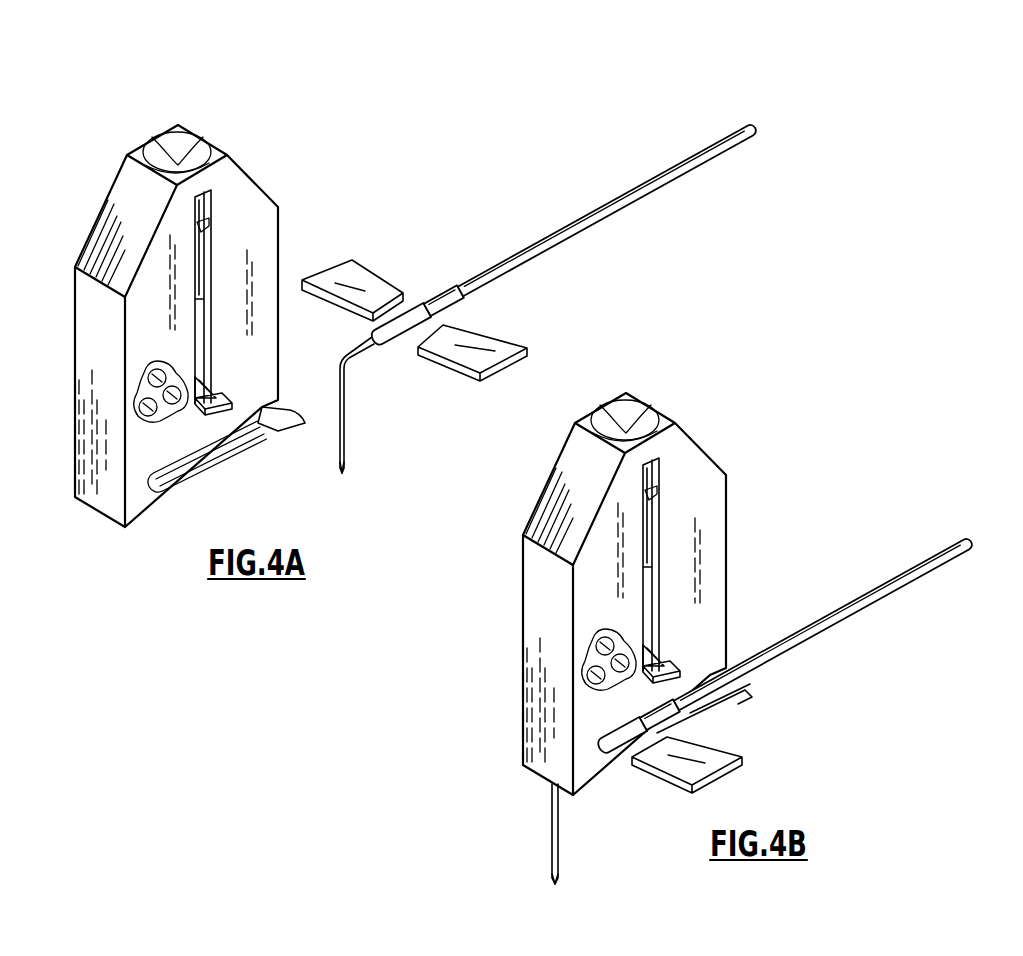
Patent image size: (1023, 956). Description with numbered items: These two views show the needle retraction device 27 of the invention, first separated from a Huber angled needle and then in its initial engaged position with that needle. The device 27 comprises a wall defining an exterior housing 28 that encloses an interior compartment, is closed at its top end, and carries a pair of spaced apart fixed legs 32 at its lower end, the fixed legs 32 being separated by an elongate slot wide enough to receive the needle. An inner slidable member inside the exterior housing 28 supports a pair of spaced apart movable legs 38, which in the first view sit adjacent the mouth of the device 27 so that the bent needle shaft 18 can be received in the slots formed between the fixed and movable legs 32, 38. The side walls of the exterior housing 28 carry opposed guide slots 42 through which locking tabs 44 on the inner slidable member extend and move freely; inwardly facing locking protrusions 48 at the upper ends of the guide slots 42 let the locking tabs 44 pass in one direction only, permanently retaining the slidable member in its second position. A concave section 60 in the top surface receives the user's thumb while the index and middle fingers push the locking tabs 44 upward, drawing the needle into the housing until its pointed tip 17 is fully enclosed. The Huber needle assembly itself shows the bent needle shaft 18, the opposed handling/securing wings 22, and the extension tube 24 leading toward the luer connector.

In FIG. 4A, the pointed tip 17 is at (342, 467).
In FIG. 4B, the pointed tip 17 is at (555, 880).
In FIG. 4A, the bent needle shaft 18 is at (345, 430).
In FIG. 4B, the bent needle shaft 18 is at (560, 843).
In FIG. 4A, the handling/securing wings 22 is at (365, 278).
In FIG. 4B, the handling/securing wings 22 is at (707, 765).
In FIG. 4A, the extension tube 24 is at (670, 160).
In FIG. 4B, the extension tube 24 is at (888, 572).
In FIG. 4A, the device 27 is at (199, 321).
In FIG. 4A, the exterior housing 28 is at (253, 228).
In FIG. 4B, the exterior housing 28 is at (700, 498).
In FIG. 4B, the fixed legs 32 is at (737, 693).
In FIG. 4A, the movable legs 38 is at (250, 434).
In FIG. 4B, the guide slots 42 is at (657, 593).
In FIG. 4A, the locking tabs 44 is at (214, 398).
In FIG. 4B, the locking tabs 44 is at (667, 670).
In FIG. 4B, the locking protrusions 48 is at (660, 470).
In FIG. 4A, the concave section 60 is at (183, 145).
In FIG. 4B, the concave section 60 is at (630, 413).